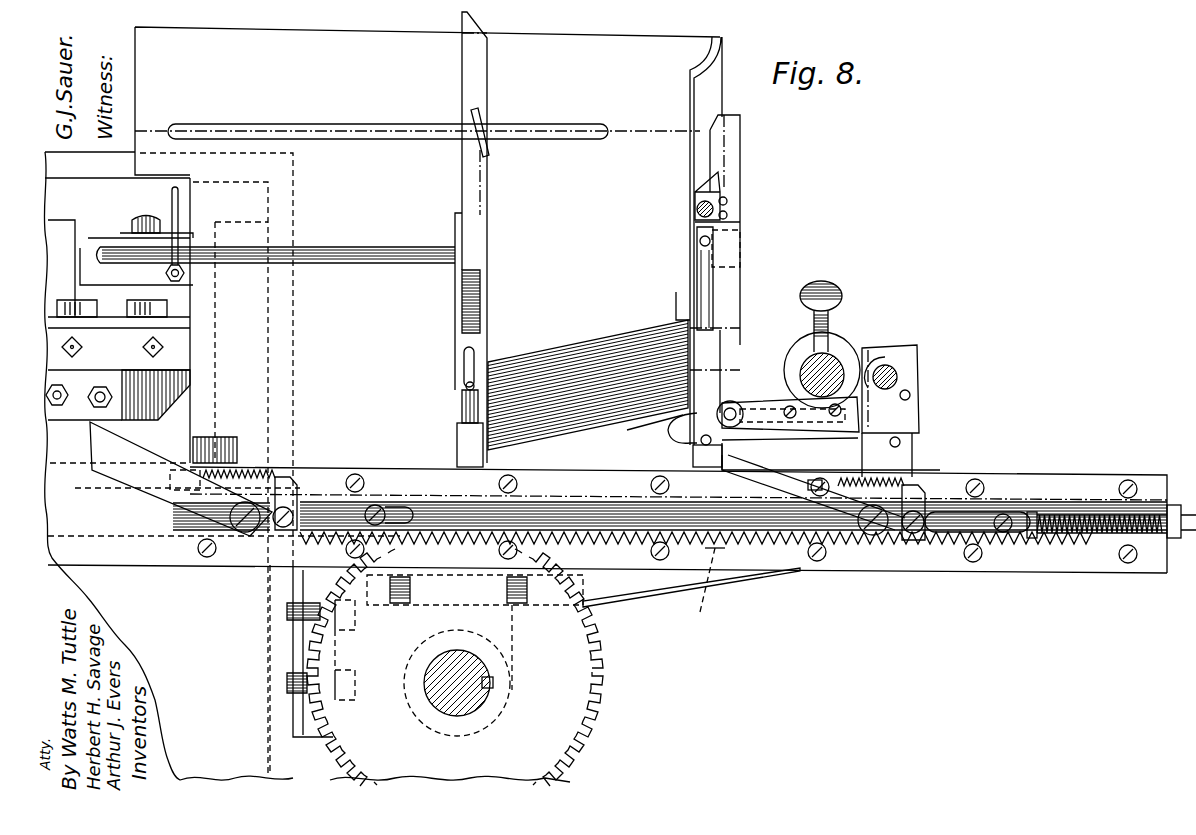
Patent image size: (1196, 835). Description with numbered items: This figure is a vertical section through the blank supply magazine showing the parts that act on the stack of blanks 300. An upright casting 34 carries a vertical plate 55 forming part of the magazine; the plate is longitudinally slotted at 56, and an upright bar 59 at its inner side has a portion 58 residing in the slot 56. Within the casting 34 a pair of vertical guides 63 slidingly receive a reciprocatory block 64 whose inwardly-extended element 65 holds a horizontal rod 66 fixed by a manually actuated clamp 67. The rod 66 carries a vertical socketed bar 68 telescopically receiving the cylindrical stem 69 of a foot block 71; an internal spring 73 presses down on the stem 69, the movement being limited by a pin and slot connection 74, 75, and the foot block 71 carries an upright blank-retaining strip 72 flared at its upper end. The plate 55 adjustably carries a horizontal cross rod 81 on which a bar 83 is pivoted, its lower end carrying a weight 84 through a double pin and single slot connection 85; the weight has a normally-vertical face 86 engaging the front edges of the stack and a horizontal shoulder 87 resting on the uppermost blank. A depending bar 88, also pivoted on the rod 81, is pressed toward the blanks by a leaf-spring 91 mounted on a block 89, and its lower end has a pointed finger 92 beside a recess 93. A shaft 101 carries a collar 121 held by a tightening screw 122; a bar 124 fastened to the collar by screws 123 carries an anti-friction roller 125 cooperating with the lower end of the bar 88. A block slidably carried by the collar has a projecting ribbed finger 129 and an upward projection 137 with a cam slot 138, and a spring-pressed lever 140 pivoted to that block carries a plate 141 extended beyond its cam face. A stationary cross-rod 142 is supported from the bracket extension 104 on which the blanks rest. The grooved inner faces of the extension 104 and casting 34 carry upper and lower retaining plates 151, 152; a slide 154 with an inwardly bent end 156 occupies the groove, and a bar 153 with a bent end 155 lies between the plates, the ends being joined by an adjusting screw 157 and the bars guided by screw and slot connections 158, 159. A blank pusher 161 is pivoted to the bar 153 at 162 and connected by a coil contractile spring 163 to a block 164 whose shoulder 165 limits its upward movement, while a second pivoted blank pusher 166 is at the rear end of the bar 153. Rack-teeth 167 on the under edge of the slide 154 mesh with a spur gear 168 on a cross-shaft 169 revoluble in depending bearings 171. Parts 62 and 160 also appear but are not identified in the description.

The upright casting 34 is at (307, 467).
The vertical plate 55 is at (427, 101).
The slot 56 is at (582, 124).
The portion of upright bar 58 is at (490, 128).
The upright bar 59 is at (462, 181).
The guide 62 is at (698, 80).
The vertical guides 63 is at (215, 222).
The vertical reciprocatory block 64 is at (136, 261).
The inwardly-extended element 65 is at (128, 238).
The horizontal rod 66 is at (356, 247).
The manually actuated clamp 67 is at (186, 275).
The vertical socketed bar 68 is at (472, 250).
The cylindrical stem 69 is at (462, 407).
The foot block 71 is at (457, 440).
The upright blank-retaining strip 72 is at (488, 316).
The internal spring 73 is at (462, 318).
The pin 74 is at (466, 383).
The slot 75 is at (463, 356).
The horizontal cross rod 81 is at (697, 210).
The bar 83 is at (742, 185).
The weight 84 is at (697, 262).
The double pin and single slot connection 85 is at (740, 258).
The normally-vertical face 86 is at (722, 330).
The substantially-horizontal shoulder 87 is at (676, 300).
The depending bar 88 is at (732, 221).
The block 89 is at (695, 197).
The leaf-spring 91 is at (725, 200).
The bevelled or pointed finger 92 is at (672, 432).
The recess or cavity 93 is at (687, 458).
The shaft 101 is at (792, 354).
The extension 104 is at (645, 605).
The collar 121 is at (833, 340).
The tightening screw 122 is at (830, 283).
The screws 123 is at (815, 430).
The bar 124 is at (760, 403).
The anti-friction roller 125 is at (731, 400).
The projecting ribbed finger 129 is at (636, 431).
The upward projection 137 is at (885, 347).
The cam slot 138 is at (870, 352).
The lever or bar 140 is at (760, 428).
The plate 141 is at (915, 356).
The stationary cross-rod 142 is at (899, 377).
The upper retaining plate 151 is at (1050, 471).
The lower retaining plate 152 is at (1060, 575).
The bar 153 is at (741, 541).
The slide 154 is at (1076, 515).
The bent end 155 is at (1030, 540).
The inwardly bent end 156 is at (1177, 503).
The adjusting screw 157 is at (1100, 546).
The screw and slot guiding connection 158 is at (986, 512).
The screw and slot guiding connection 159 is at (375, 505).
The ledge 160 is at (85, 435).
The dog or blank pusher 161 is at (762, 477).
The pivot 162 is at (870, 536).
The coil contractile spring 163 is at (888, 476).
The block 164 is at (916, 493).
The shoulder 165 is at (915, 534).
The pivoted blank finger or pusher 166 is at (150, 457).
The rack-teeth 167 is at (703, 589).
The spur gear 168 is at (600, 676).
The cross-shaft 169 is at (440, 706).
The depending bearings 171 is at (512, 645).
The stack of blanks 300 is at (593, 357).